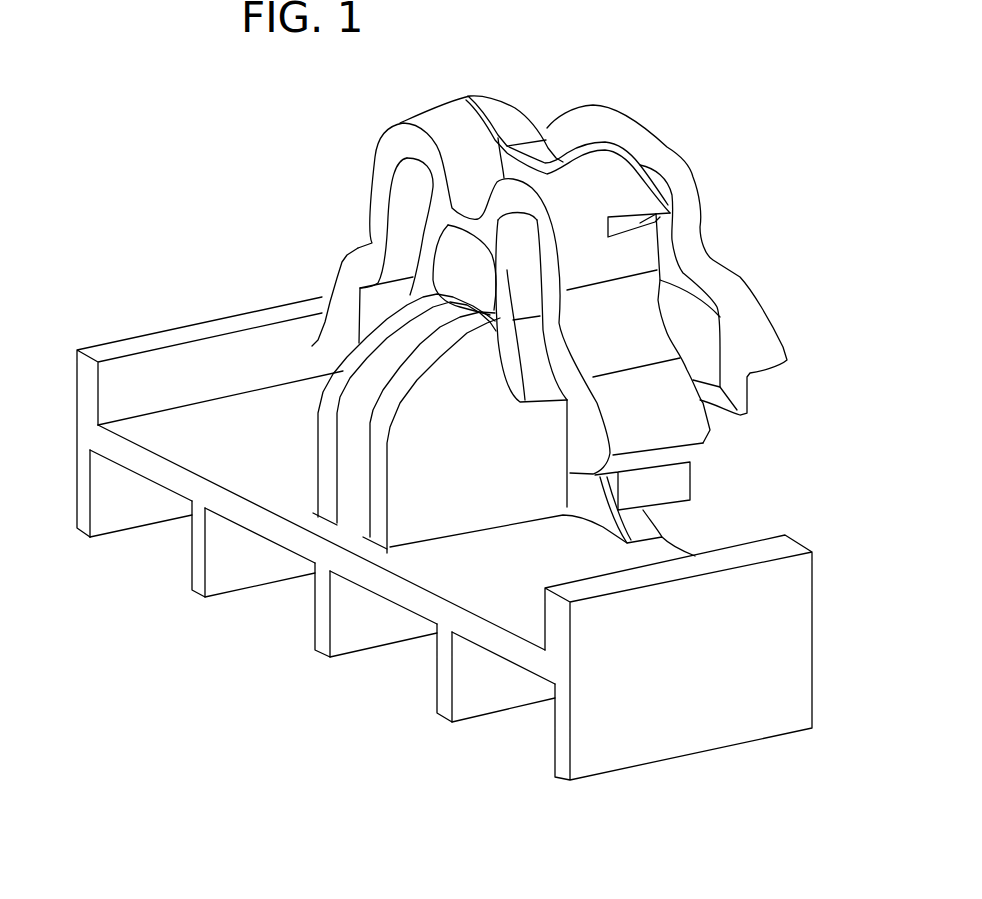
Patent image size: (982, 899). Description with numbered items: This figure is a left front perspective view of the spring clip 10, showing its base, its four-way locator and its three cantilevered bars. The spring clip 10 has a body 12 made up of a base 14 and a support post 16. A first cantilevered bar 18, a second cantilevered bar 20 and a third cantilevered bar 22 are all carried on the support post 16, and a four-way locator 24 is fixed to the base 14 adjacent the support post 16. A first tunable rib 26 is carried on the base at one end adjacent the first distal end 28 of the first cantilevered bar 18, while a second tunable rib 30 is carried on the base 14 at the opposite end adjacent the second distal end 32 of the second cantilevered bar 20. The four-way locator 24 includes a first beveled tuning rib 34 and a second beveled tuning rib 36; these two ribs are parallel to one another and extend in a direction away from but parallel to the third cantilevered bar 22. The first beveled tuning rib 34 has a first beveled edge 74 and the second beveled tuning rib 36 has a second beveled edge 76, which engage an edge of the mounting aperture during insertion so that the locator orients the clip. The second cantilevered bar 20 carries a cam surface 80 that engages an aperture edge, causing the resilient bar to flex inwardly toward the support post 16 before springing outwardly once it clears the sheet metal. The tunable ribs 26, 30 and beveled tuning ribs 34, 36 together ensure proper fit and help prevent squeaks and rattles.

The spring clip 10 is at (750, 95).
The body 12 is at (313, 688).
The base 14 is at (268, 482).
The support post 16 is at (580, 500).
The first cantilevered bar 18 is at (375, 188).
The second cantilevered bar 20 is at (673, 338).
The third cantilevered bar 22 is at (740, 277).
The 4-way locator 24 is at (313, 369).
The first tunable rib 26 is at (113, 347).
The first distal end 28 is at (343, 345).
The second tunable rib 30 is at (790, 547).
The second distal end 32 is at (660, 457).
The first beveled tuning rib 34 is at (348, 429).
The second beveled tuning rib 36 is at (422, 513).
The first beveled edge 74 is at (322, 478).
The second beveled edge 76 is at (382, 477).
The cam surface 80 is at (657, 411).